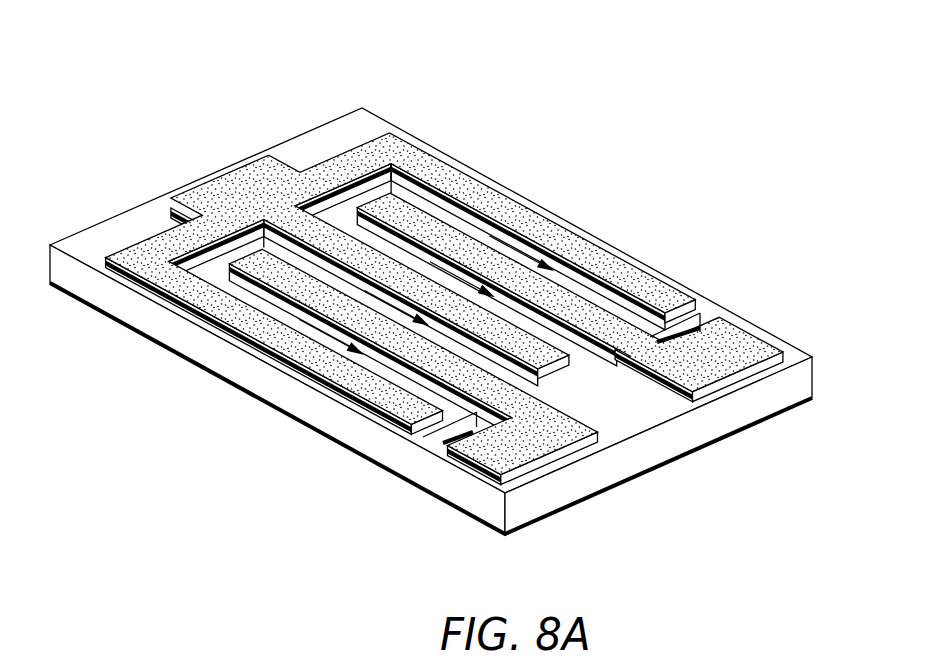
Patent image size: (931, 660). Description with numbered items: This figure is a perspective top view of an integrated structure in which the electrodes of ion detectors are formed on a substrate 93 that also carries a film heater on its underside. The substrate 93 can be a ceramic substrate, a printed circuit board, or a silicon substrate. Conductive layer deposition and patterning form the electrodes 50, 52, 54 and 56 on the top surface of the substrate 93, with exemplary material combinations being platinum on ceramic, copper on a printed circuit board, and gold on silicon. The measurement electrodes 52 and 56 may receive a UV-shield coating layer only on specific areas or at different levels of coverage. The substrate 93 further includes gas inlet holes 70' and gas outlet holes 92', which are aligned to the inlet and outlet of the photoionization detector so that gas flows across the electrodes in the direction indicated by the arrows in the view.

The electrode 50 is at (222, 190).
The electrode 54 is at (222, 190).
The measurement electrode 52 is at (743, 340).
The measurement electrode 56 is at (543, 443).
The gas inlet holes 70' is at (396, 187).
The gas outlet holes 92' is at (561, 284).
The substrate 93 is at (258, 382).